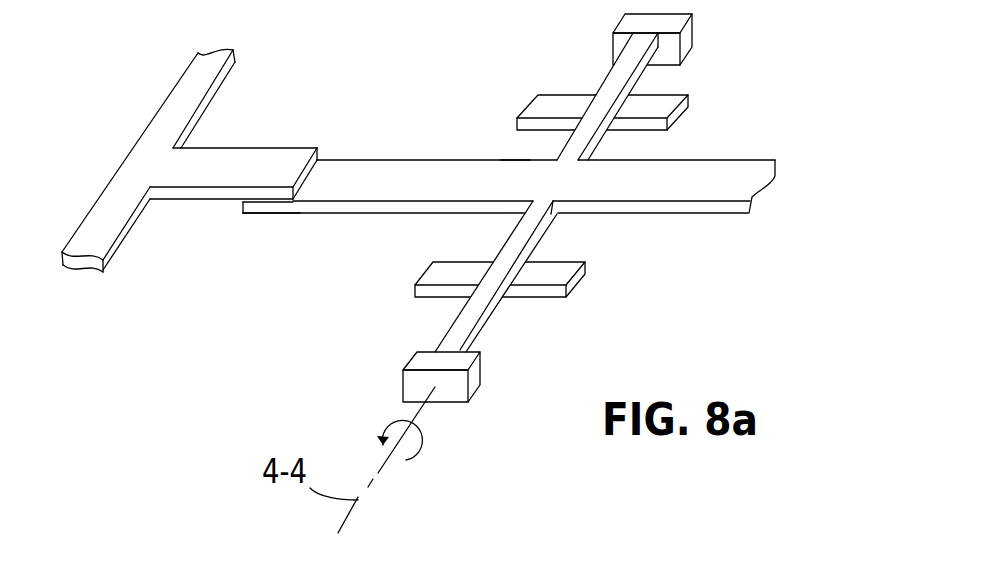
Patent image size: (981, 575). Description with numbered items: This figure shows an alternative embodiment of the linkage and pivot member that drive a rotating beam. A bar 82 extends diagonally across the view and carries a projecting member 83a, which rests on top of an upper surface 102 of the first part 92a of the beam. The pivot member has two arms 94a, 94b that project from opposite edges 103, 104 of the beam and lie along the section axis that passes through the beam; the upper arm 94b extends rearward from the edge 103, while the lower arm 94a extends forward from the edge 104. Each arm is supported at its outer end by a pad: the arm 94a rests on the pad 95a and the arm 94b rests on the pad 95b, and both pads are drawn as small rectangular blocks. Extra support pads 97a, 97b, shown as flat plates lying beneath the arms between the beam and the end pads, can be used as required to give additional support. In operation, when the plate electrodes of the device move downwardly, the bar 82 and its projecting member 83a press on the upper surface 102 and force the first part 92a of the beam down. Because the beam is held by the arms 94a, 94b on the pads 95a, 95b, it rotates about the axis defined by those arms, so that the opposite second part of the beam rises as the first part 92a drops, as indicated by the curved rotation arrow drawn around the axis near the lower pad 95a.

The bar 82 is at (153, 152).
The projecting member 83a is at (257, 158).
The first part of the beam 92a is at (437, 196).
The arm 94a is at (487, 317).
The arm 94b is at (603, 82).
The pad 95a is at (402, 382).
The pad 95b is at (683, 42).
The extra support pad 97a is at (583, 273).
The extra support pad 97b is at (683, 110).
The upper surface 102 is at (305, 180).
The edge of the beam 103 is at (514, 160).
The edge of the beam 104 is at (508, 216).